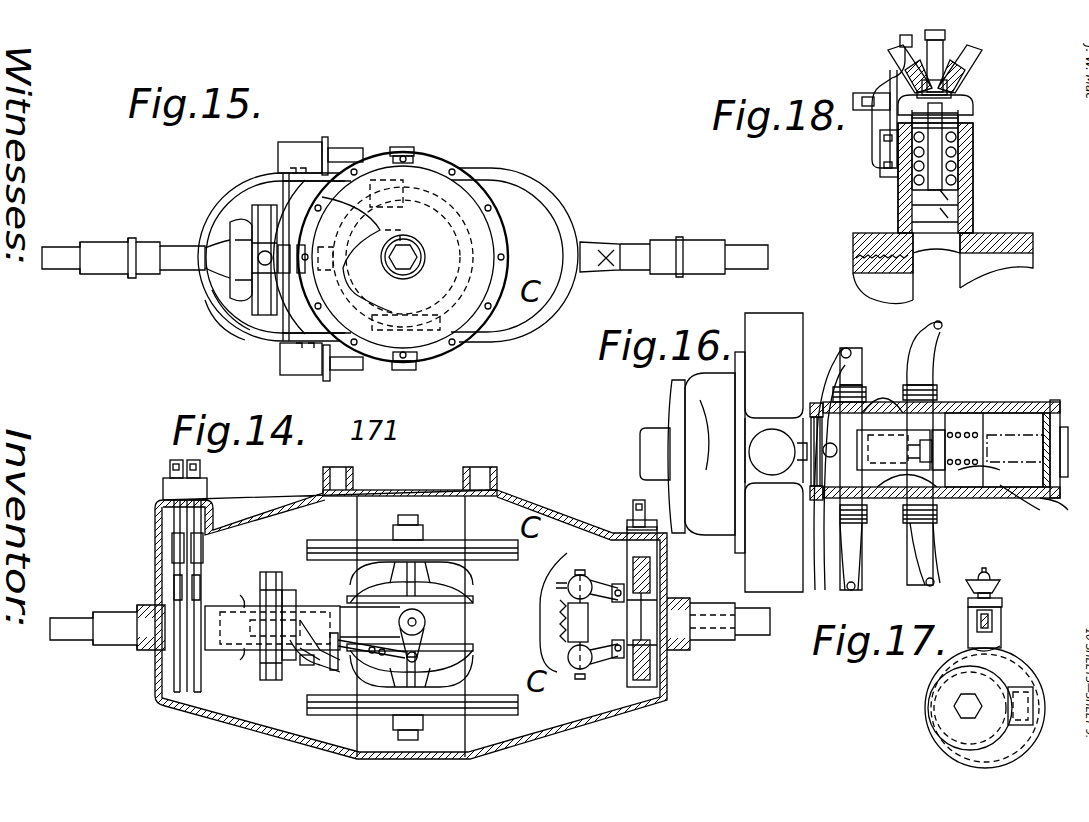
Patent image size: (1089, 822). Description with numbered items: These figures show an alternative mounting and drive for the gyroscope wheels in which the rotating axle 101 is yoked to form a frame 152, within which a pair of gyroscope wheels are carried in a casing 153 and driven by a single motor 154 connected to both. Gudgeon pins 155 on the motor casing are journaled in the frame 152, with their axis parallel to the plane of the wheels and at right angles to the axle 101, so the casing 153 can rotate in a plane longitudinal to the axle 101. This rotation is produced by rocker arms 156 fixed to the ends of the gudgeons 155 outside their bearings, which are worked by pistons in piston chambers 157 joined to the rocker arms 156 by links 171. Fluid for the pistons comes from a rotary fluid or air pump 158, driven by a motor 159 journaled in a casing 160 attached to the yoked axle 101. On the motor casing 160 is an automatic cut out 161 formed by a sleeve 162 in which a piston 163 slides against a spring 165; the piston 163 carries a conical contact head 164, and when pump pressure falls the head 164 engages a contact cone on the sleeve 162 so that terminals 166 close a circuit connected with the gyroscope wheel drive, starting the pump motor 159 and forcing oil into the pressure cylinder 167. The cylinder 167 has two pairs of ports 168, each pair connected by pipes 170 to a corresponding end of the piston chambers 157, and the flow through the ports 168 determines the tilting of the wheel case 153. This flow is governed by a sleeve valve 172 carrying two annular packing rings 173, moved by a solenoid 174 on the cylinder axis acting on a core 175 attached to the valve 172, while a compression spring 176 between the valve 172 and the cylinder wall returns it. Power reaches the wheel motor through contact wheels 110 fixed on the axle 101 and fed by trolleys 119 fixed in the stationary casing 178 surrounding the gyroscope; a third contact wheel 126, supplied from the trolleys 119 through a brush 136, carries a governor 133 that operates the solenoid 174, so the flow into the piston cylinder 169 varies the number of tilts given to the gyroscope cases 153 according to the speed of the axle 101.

In FIG. 15, the rotating axle 101 is at (118, 270).
In FIG. 14, the rotating axle 101 is at (112, 640).
In FIG. 14, the contact wheels 110 is at (185, 590).
In FIG. 14, the trolleys 119 is at (165, 532).
In FIG. 14, the third contact wheel 126 is at (650, 580).
In FIG. 14, the governor 133 is at (575, 662).
In FIG. 14, the brush 136 is at (648, 550).
In FIG. 15, the frame 152 is at (262, 345).
In FIG. 14, the frame 152 is at (548, 578).
In FIG. 15, the casing 153 is at (482, 238).
In FIG. 14, the casing 153 is at (335, 562).
In FIG. 14, the motor 154 is at (463, 597).
In FIG. 15, the gudgeon pins 155 is at (404, 147).
In FIG. 14, the gudgeon pins 155 is at (440, 624).
In FIG. 15, the rocker arms 156 is at (415, 158).
In FIG. 14, the rocker arms 156 is at (455, 652).
In FIG. 15, the piston chambers 157 is at (300, 160).
In FIG. 14, the piston chambers 157 is at (290, 660).
In FIG. 15, the rotary fluid or air pump 158 is at (252, 300).
In FIG. 14, the rotary fluid or air pump 158 is at (270, 580).
In FIG. 18, the rotary fluid or air pump 158 is at (860, 265).
In FIG. 15, the pump motor 159 is at (228, 240).
In FIG. 14, the pump motor 159 is at (244, 605).
In FIG. 16, the pump motor 159 is at (650, 442).
In FIG. 15, the motor casing 160 is at (240, 332).
In FIG. 16, the motor casing 160 is at (668, 480).
In FIG. 15, the automatic cut out 161 is at (300, 188).
In FIG. 16, the automatic cut out 161 is at (845, 575).
In FIG. 17, the automatic cut out 161 is at (995, 630).
In FIG. 18, the automatic cut out 161 is at (898, 205).
In FIG. 18, the sleeve 162 is at (965, 165).
In FIG. 18, the piston 163 is at (945, 210).
In FIG. 18, the conical contact head 164 is at (960, 52).
In FIG. 18, the spring 165 is at (965, 142).
In FIG. 17, the terminals 166 is at (1003, 642).
In FIG. 18, the terminals 166 is at (896, 40).
In FIG. 15, the pressure cylinder 167 is at (205, 350).
In FIG. 16, the pressure cylinder 167 is at (1040, 500).
In FIG. 17, the pressure cylinder 167 is at (940, 710).
In FIG. 16, the ports 168 is at (842, 365).
In FIG. 16, the piston cylinder 169 is at (890, 490).
In FIG. 15, the pipes 170 is at (345, 201).
In FIG. 14, the pipes 170 is at (310, 640).
In FIG. 16, the pipes 170 is at (920, 370).
In FIG. 14, the links 171 is at (410, 480).
In FIG. 16, the sleeve valve 172 is at (925, 505).
In FIG. 16, the annular packing rings 173 is at (950, 400).
In FIG. 16, the solenoid 174 is at (1008, 430).
In FIG. 16, the core 175 is at (966, 450).
In FIG. 16, the compression spring 176 is at (1035, 490).
In FIG. 14, the stationary casing 178 is at (400, 490).